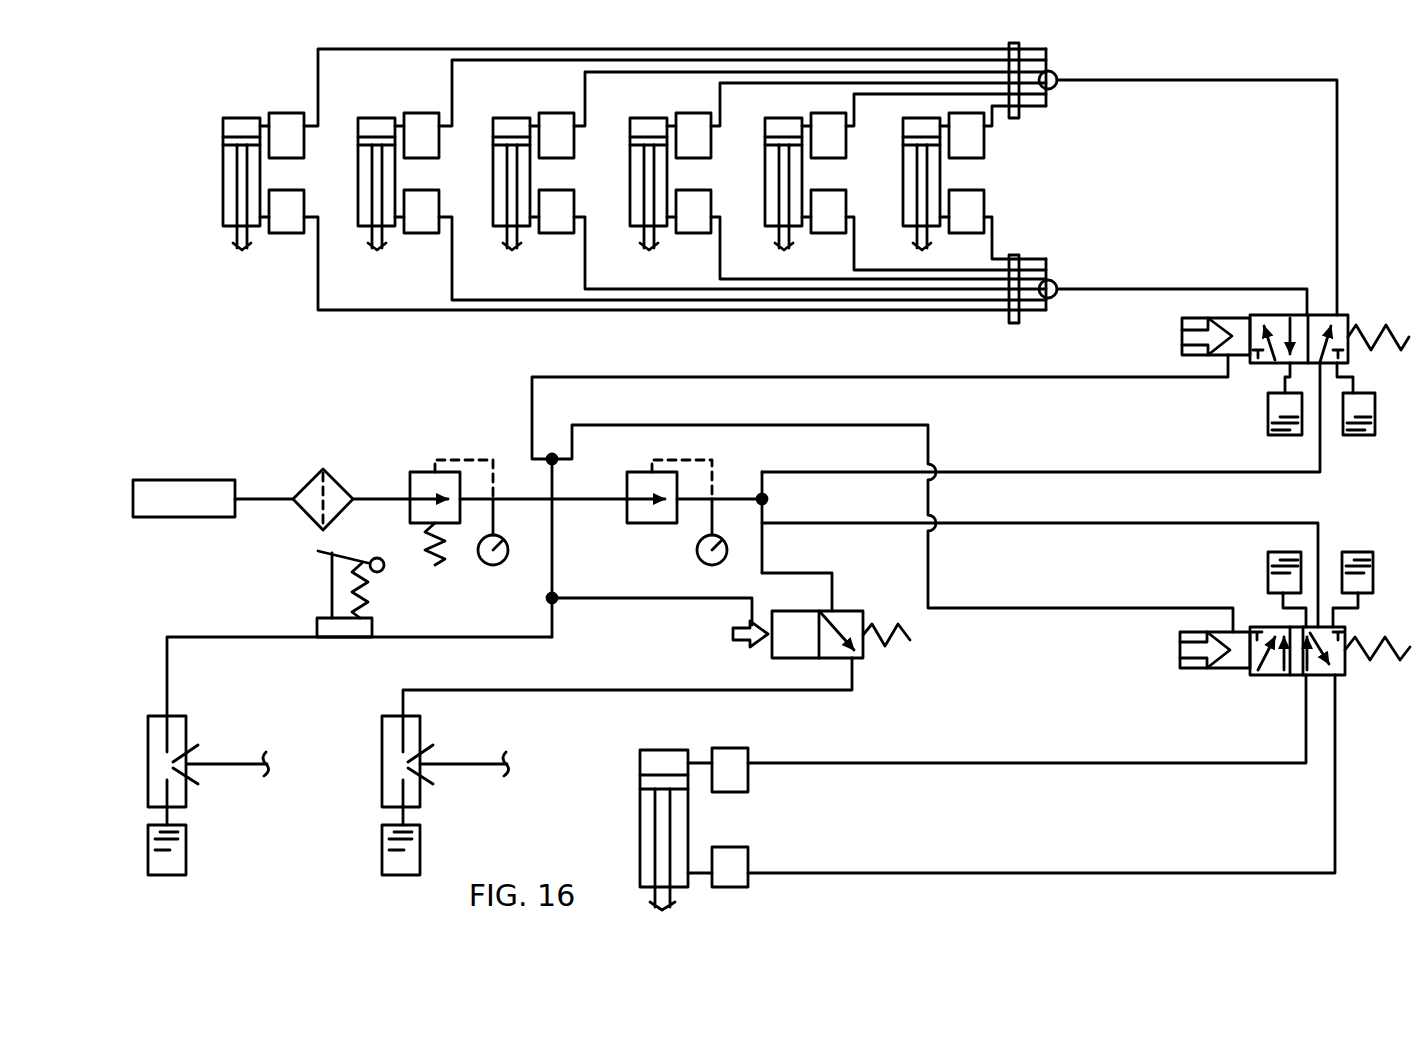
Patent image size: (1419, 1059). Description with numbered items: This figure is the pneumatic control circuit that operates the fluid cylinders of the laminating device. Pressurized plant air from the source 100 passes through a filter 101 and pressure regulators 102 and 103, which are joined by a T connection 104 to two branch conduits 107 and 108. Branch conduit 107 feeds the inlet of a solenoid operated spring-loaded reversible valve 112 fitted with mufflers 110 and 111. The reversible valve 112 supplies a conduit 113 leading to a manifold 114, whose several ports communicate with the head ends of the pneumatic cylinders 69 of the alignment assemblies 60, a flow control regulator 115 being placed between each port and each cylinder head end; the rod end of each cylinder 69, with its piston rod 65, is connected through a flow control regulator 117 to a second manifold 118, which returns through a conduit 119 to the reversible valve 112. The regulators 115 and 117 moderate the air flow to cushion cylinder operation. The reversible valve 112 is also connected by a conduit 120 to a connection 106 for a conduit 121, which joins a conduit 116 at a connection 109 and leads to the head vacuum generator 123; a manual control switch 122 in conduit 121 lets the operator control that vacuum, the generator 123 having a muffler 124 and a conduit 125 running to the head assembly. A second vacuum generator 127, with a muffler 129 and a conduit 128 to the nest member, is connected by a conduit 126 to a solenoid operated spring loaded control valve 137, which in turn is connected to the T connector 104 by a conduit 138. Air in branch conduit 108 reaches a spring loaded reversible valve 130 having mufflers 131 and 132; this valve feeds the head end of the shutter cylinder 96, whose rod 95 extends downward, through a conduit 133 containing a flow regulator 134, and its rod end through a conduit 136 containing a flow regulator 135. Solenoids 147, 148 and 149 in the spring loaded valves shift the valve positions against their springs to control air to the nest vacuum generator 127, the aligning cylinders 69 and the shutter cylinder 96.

The alignment assembly 60 is at (217, 169).
The pneumatic cylinder 69 is at (222, 125).
The piston rod 65 is at (233, 237).
The flow control regulator 115 is at (288, 114).
The flow control regulator 117 is at (288, 234).
The manifold 114 is at (1059, 76).
The manifold 118 is at (1050, 282).
The conduit 113 is at (1336, 182).
The conduit 119 is at (1210, 288).
The reversible valve 112 is at (1316, 310).
The solenoid 149 is at (1182, 330).
The conduit 120 is at (912, 376).
The muffler 110 is at (1268, 414).
The muffler 111 is at (1378, 394).
The branch conduit 107 is at (1007, 471).
The branch conduit 108 is at (1007, 524).
The source 100 is at (179, 478).
The filter 101 is at (321, 468).
The pressure regulator 102 is at (410, 470).
The pressure regulator 103 is at (650, 523).
The connection 106 is at (555, 460).
The T connection 104 is at (770, 498).
The conduit 138 is at (766, 562).
The connection 109 is at (552, 638).
The conduit 116 is at (642, 598).
The solenoid 147 is at (733, 634).
The control valve 137 is at (858, 608).
The conduit 126 is at (615, 690).
The conduit 121 is at (414, 638).
The manual control switch 122 is at (332, 584).
The vacuum generator 123 is at (190, 710).
The conduit 125 is at (238, 762).
The muffler 124 is at (187, 835).
The second vacuum generator 127 is at (385, 710).
The conduit 128 is at (468, 762).
The muffler 129 is at (382, 838).
The pneumatic cylinder 96 is at (640, 825).
The piston rod 95 is at (671, 895).
The flow regulator 134 is at (748, 751).
The flow regulator 135 is at (736, 855).
The conduit 133 is at (959, 764).
The conduit 136 is at (1336, 761).
The reversible valve 130 is at (1273, 680).
The solenoid 148 is at (1180, 658).
The muffler 131 is at (1268, 576).
The muffler 132 is at (1374, 580).